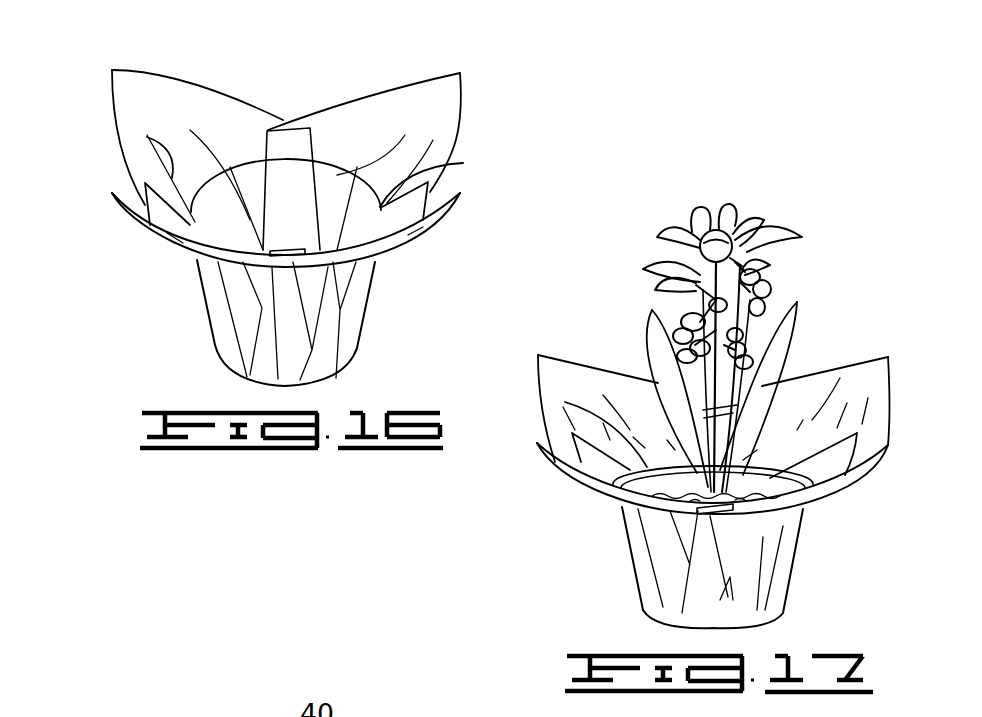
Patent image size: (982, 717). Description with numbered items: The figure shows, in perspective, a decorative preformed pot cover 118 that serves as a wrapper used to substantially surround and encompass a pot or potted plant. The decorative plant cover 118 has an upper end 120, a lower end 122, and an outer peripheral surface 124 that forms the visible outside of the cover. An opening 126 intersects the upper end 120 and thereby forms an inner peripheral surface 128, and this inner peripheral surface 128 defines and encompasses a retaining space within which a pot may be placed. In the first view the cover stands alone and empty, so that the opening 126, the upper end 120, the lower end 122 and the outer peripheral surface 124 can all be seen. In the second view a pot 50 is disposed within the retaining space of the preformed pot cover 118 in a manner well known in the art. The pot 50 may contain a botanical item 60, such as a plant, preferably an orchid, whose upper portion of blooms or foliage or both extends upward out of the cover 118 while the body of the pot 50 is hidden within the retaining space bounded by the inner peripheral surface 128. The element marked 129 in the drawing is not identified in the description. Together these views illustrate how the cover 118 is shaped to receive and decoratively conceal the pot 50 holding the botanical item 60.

In FIG. 16, the decorative preformed pot cover 118 is at (284, 163).
In FIG. 17, the decorative preformed pot cover 118 is at (707, 376).
In FIG. 16, the upper end 120 is at (463, 164).
In FIG. 16, the lower end 122 is at (327, 380).
In FIG. 16, the outer peripheral surface 124 is at (323, 311).
In FIG. 16, the opening 126 is at (250, 193).
In FIG. 16, the inner peripheral surface 128 is at (147, 137).
In FIG. 16, the tab / connecting portion 129 is at (327, 187).
In FIG. 17, the pot 50 is at (541, 403).
In FIG. 17, the botanical item 60 is at (801, 327).